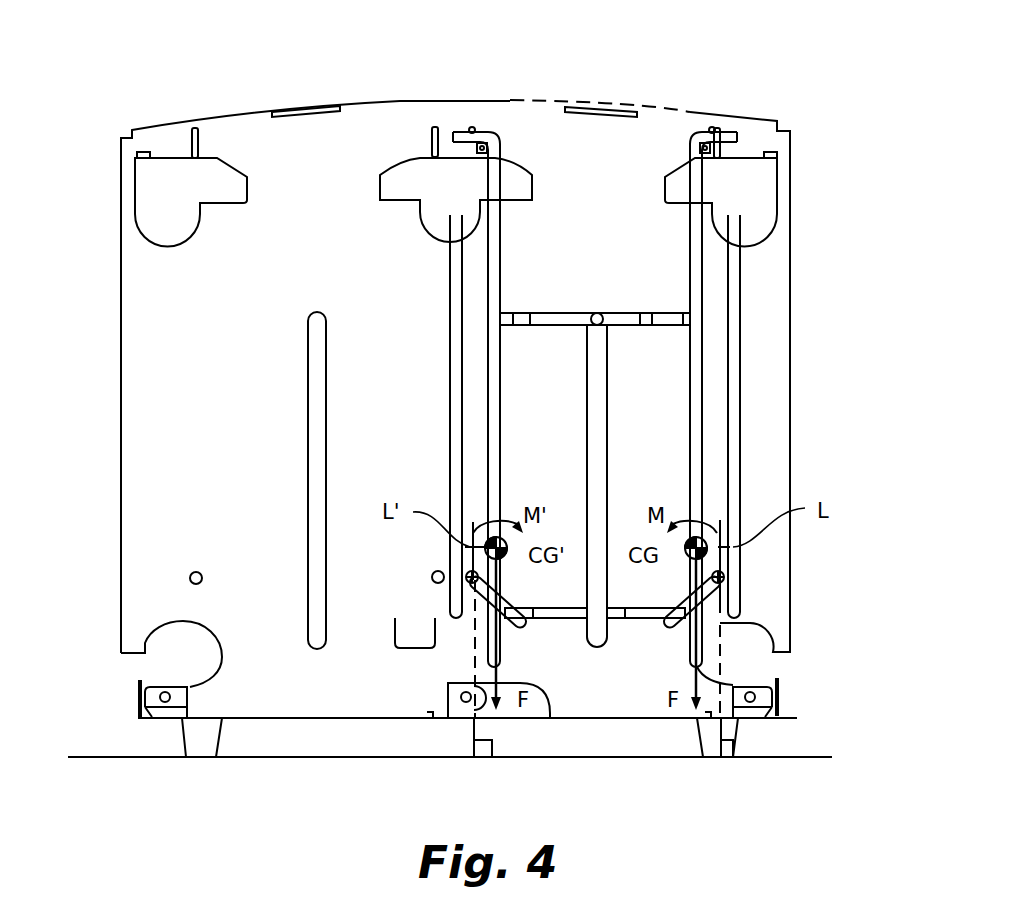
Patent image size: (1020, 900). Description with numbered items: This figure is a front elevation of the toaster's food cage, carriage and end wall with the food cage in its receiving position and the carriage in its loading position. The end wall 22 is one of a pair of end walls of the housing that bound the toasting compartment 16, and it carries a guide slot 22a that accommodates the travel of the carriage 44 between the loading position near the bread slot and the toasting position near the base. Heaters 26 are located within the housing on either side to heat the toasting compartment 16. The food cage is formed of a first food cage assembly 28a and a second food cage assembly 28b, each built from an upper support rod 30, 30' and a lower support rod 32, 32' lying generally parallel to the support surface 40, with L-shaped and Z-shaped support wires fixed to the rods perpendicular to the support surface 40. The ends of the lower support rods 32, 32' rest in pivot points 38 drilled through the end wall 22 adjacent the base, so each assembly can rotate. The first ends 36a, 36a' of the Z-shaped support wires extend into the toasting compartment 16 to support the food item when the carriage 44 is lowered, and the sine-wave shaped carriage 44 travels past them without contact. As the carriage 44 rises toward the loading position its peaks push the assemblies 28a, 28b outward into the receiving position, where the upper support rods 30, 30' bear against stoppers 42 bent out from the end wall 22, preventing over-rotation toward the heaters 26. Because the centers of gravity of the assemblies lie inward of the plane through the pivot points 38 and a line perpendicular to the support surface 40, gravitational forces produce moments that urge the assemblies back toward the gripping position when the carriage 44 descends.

The toasting compartment 16 is at (603, 390).
The end wall 22 is at (150, 322).
The guide slot 22a is at (590, 423).
The heater 26 is at (453, 377).
The first food cage assembly 28a is at (745, 116).
The second food cage assembly 28b is at (484, 132).
The upper support rod 30 is at (697, 103).
The upper support rod 30' is at (534, 109).
The lower support rod 32 is at (759, 613).
The lower support rod 32' is at (433, 632).
The first end of Z-shaped support wire 36a is at (646, 640).
The first end of Z-shaped support wire 36a' is at (546, 640).
The pivot point 38 is at (462, 568).
The support surface 40 is at (802, 757).
The stopper 42 is at (474, 128).
The carriage 44 is at (617, 265).